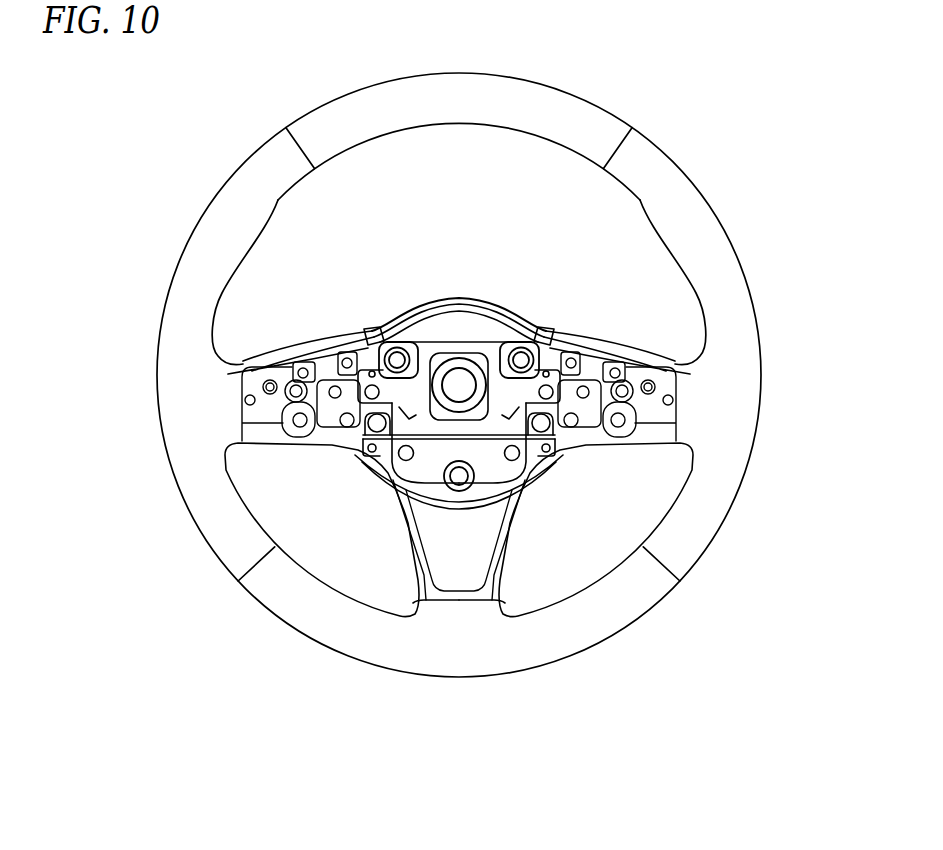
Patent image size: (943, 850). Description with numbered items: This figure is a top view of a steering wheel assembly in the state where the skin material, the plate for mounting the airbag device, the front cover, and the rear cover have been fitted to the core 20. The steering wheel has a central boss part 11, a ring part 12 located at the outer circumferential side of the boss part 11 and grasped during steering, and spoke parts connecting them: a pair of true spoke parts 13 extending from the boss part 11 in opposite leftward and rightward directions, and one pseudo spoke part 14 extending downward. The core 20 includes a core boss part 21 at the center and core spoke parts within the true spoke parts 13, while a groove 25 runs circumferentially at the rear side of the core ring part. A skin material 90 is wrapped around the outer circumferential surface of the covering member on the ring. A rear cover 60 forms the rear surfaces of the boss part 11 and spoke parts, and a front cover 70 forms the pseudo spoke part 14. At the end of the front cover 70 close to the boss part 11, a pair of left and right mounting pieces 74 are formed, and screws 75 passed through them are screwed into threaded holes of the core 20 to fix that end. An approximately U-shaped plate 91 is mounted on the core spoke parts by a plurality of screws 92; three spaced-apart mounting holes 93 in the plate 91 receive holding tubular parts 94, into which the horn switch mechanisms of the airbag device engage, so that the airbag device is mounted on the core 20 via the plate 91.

The skin material 90 is at (742, 412).
The ring part 12 is at (575, 90).
The true spoke parts 13 is at (273, 348).
The pseudo spoke part 14 is at (403, 580).
The front cover 70 is at (492, 552).
The rear cover 60 is at (492, 298).
The core 20 is at (502, 337).
The boss part 11 is at (439, 298).
The core boss part 21 is at (436, 356).
The groove 25 is at (467, 352).
The mounting holes 93 is at (373, 355).
The holding tubular parts 94 is at (383, 325).
The screws 92 is at (318, 355).
The screws 75 is at (370, 436).
The mounting pieces 74 is at (365, 437).
The plate 91 is at (432, 493).